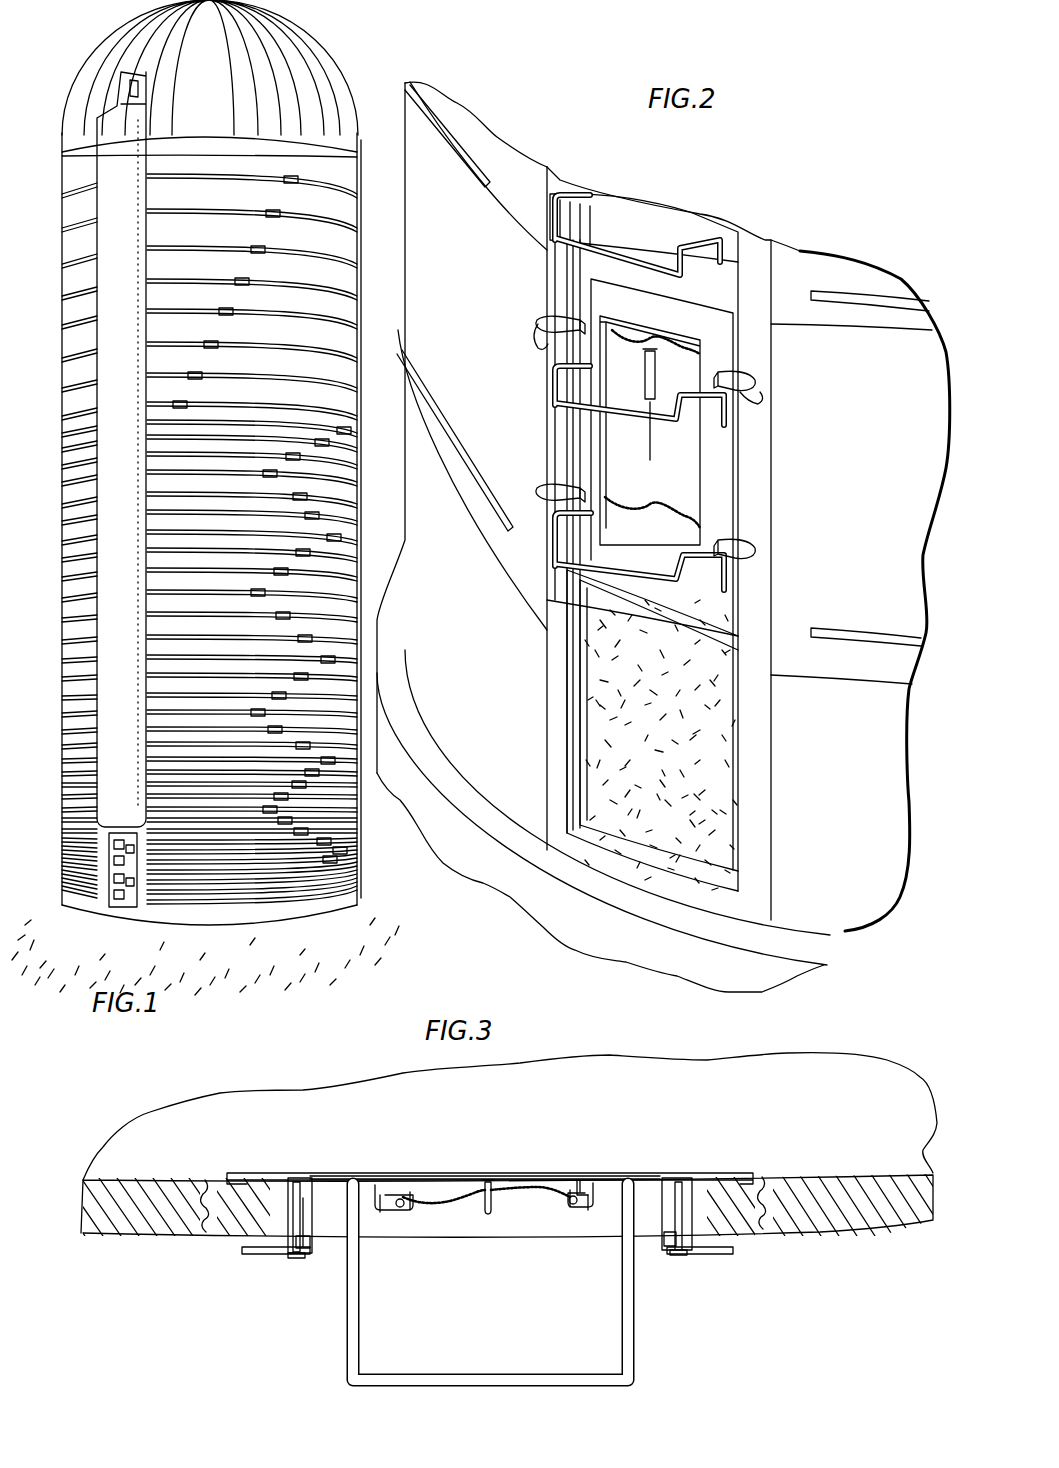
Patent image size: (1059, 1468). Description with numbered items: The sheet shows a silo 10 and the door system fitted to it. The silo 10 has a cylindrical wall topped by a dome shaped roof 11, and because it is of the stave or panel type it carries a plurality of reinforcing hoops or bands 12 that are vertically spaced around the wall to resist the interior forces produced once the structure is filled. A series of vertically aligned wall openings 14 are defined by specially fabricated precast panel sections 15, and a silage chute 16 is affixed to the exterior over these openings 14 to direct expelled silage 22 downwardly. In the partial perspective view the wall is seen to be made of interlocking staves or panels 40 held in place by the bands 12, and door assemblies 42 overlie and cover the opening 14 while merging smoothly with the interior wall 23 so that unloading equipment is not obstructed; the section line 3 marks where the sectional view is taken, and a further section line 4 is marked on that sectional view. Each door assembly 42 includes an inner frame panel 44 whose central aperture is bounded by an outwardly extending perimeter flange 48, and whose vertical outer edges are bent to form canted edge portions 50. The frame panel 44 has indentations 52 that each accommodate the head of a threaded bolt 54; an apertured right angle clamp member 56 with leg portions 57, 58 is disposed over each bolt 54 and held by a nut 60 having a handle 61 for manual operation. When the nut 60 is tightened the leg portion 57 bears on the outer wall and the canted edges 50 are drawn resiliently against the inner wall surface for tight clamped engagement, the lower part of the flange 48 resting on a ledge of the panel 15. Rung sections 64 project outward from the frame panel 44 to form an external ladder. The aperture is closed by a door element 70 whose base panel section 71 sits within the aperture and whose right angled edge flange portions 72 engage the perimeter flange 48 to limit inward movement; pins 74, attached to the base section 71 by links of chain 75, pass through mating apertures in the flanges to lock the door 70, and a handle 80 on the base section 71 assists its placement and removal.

In FIG. 2, the section line 3— 3 is at (502, 304).
In FIG. 3, the section line 4— 4 is at (488, 1155).
In FIG. 2, the silo 10 is at (372, 843).
In FIG. 1, the dome shaped roof 11 is at (315, 70).
In FIG. 1, the reinforcing hoops or bands 12 is at (62, 203).
In FIG. 2, the reinforcing hoops or bands 12 is at (497, 540).
In FIG. 2, the wall openings 14 is at (732, 697).
In FIG. 2, the precast panel sections 15 is at (761, 606).
In FIG. 3, the precast panel sections 15 is at (200, 1238).
In FIG. 1, the silage chute 16 is at (129, 150).
In FIG. 2, the silage 22 is at (715, 802).
In FIG. 3, the interior wall 23 is at (158, 1176).
In FIG. 2, the staves or panels 40 is at (838, 903).
In FIG. 3, the staves or panels 40 is at (130, 1238).
In FIG. 1, the door assemblies 42 is at (105, 864).
In FIG. 2, the door assemblies 42 is at (600, 455).
In FIG. 2, the inner frame panel 44 is at (725, 328).
In FIG. 3, the inner frame panel 44 is at (335, 1178).
In FIG. 3, the perimeter flange 48 is at (385, 1185).
In FIG. 3, the canted edge portions 50 is at (232, 1175).
In FIG. 3, the indentations 52 is at (300, 1178).
In FIG. 3, the threaded bolt 54 is at (326, 1258).
In FIG. 2, the right angle clamp member 56 is at (575, 318).
In FIG. 3, the leg portion 57 is at (728, 1256).
In FIG. 3, the leg portion 58 is at (668, 1250).
In FIG. 3, the nut 60 is at (295, 1264).
In FIG. 2, the handle 61 is at (540, 342).
In FIG. 3, the handle 61 is at (258, 1256).
In FIG. 2, the rung sections 64 is at (690, 415).
In FIG. 3, the rung sections 64 is at (640, 1335).
In FIG. 2, the door element 70 is at (682, 477).
In FIG. 3, the door element 70 is at (489, 1181).
In FIG. 3, the base panel section 71 is at (580, 1180).
In FIG. 3, the edge flange portions 72 is at (405, 1200).
In FIG. 3, the pins 74 is at (382, 1215).
In FIG. 3, the links of chain 75 is at (415, 1215).
In FIG. 2, the handle 80 is at (660, 366).
In FIG. 3, the handle 80 is at (488, 1215).